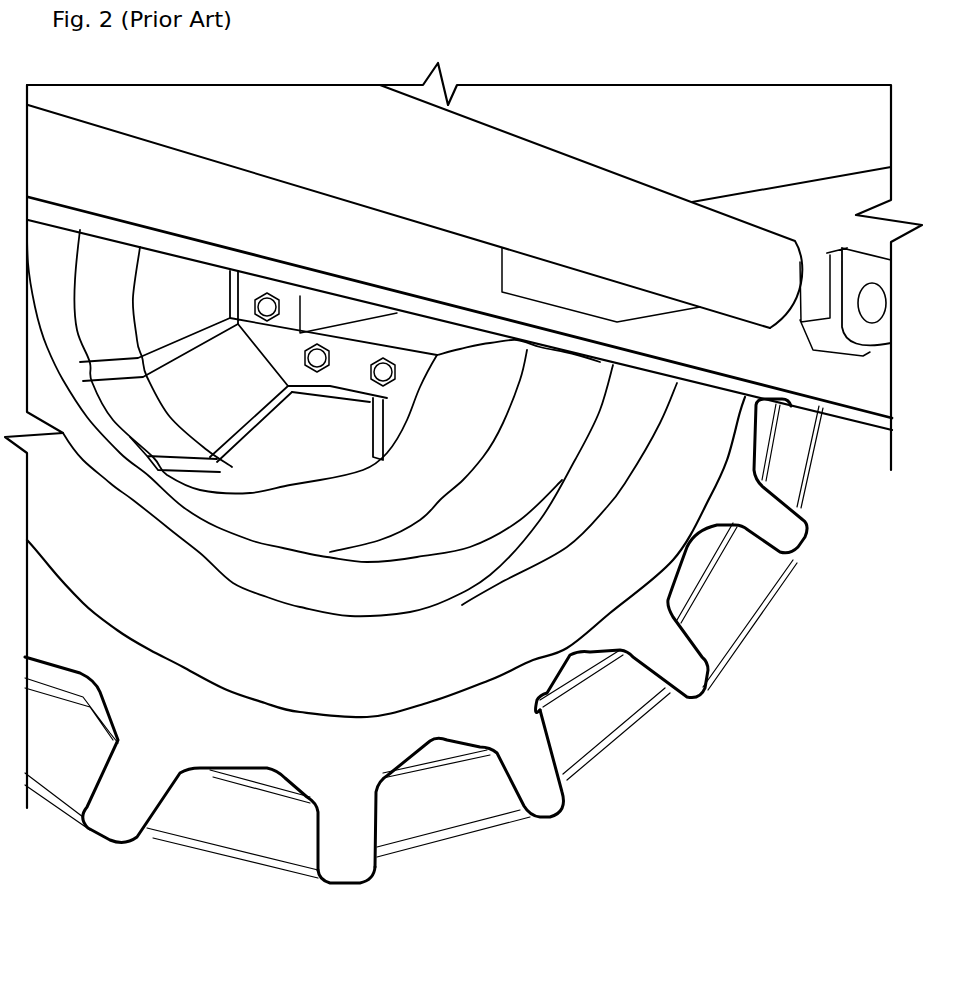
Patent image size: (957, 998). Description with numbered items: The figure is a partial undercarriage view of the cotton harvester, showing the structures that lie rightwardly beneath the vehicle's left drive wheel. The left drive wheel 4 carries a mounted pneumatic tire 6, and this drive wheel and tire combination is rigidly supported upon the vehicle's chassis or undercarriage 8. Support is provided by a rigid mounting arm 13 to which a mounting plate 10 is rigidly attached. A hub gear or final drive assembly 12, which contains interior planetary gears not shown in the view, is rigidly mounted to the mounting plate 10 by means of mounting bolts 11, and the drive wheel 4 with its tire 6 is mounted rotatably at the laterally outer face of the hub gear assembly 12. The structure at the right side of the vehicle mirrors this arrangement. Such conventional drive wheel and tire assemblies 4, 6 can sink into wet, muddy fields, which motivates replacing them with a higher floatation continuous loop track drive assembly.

The drive wheel 4 is at (533, 473).
The pneumatic tire 6 is at (427, 790).
The chassis or undercarriage 8 is at (673, 343).
The mounting plate 10 is at (395, 378).
The mounting bolt 11 is at (400, 357).
The hub gear or final drive assembly 12 is at (148, 430).
The rigid mounting arm 13 is at (387, 325).